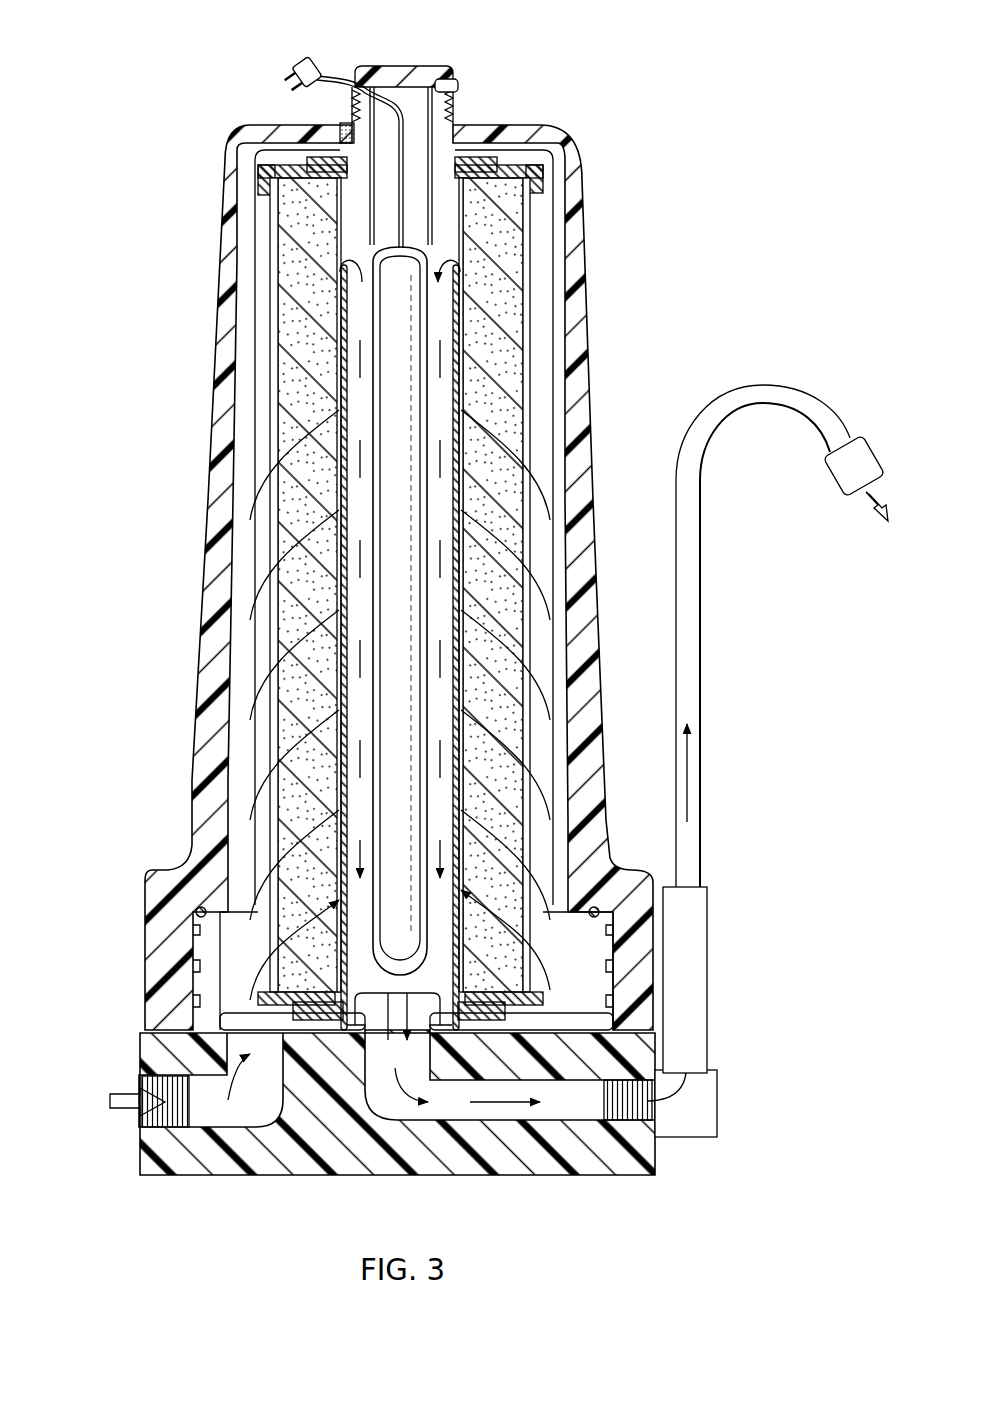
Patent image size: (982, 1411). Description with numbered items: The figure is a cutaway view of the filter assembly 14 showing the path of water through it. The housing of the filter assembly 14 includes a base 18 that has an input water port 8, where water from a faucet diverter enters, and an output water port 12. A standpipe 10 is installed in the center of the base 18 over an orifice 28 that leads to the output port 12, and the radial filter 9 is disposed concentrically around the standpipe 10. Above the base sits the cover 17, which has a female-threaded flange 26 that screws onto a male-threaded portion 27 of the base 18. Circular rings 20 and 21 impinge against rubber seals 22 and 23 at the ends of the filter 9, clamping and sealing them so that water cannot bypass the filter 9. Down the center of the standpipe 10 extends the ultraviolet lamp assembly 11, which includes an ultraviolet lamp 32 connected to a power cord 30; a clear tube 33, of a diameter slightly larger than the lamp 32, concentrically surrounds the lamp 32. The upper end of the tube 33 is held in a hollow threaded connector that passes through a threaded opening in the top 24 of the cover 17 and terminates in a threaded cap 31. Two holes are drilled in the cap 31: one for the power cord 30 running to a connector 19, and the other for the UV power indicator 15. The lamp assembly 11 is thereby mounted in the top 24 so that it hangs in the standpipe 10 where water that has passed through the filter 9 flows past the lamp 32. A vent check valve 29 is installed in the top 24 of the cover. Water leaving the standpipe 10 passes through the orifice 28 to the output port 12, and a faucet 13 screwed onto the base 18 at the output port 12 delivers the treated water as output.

The input water port 8 is at (233, 1108).
The radial filter 9 is at (290, 497).
The standpipe 10 is at (460, 412).
The ultraviolet lamp assembly 11 is at (382, 711).
The output water port 12 is at (576, 1110).
The faucet 13 is at (763, 389).
The filter assembly 14 is at (371, 557).
The UV power indicator 15 is at (459, 86).
The cover 17 is at (217, 268).
The base 18 is at (455, 1166).
The connector 19 is at (299, 58).
The circular ring 20 is at (520, 152).
The circular ring 21 is at (535, 1060).
The rubber seal 22 is at (498, 166).
The rubber seal 23 is at (454, 118).
The top 24 is at (542, 128).
The female-threaded flange 26 is at (146, 946).
The male-threaded portion 27 is at (194, 974).
The orifice 28 is at (395, 1052).
The vent check valve 29 is at (347, 122).
The power cord 30 is at (343, 76).
The threaded cap 31 is at (415, 66).
The ultraviolet lamp 32 is at (394, 611).
The clear tube 33 is at (434, 224).